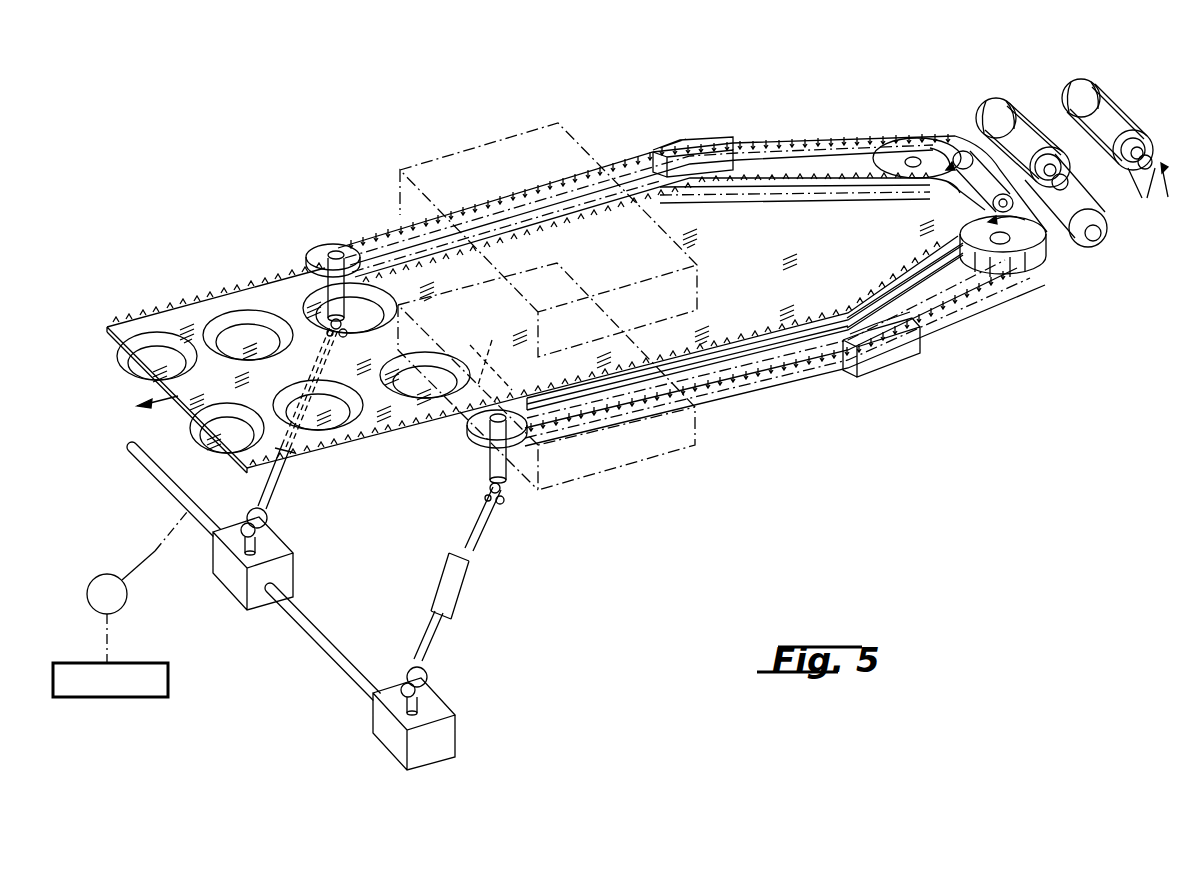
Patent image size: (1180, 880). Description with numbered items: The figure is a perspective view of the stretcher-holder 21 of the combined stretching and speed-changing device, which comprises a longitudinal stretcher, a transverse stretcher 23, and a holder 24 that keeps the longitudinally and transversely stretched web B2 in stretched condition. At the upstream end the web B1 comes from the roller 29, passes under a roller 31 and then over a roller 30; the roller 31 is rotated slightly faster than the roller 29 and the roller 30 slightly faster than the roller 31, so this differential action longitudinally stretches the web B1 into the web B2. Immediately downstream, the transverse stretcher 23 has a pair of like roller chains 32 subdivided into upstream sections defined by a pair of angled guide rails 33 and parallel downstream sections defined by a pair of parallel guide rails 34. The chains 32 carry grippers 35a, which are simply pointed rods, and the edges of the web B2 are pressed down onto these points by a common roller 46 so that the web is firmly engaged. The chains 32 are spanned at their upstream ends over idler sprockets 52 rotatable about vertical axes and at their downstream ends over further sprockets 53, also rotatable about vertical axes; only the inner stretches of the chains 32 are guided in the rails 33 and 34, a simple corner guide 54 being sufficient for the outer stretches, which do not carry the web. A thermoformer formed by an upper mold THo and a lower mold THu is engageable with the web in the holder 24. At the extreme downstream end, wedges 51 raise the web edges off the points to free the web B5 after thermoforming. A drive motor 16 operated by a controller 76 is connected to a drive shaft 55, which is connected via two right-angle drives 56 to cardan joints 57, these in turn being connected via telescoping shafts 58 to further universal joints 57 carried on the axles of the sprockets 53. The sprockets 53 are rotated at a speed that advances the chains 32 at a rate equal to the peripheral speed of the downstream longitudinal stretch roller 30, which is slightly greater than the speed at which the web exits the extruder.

The stretcher-holder 21 is at (803, 509).
The drive motor 16 is at (98, 576).
The transverse stretcher 23 is at (848, 257).
The holder 24 is at (460, 334).
The roller 29 is at (1080, 88).
The roller 30 is at (993, 100).
The roller 31 is at (1085, 240).
The roller chains 32 is at (623, 158).
The angled guide rails 33 is at (925, 285).
The parallel guide rails 34 is at (710, 367).
The grippers 35a is at (823, 135).
The common roller 46 is at (964, 152).
The wedges 51 is at (486, 355).
The idler sprockets 52 is at (898, 147).
The sprockets 53 is at (318, 245).
The corner guide 54 is at (688, 147).
The drive shaft 55 is at (182, 510).
The right-angle drives 56 is at (235, 583).
The cardan joints 57 is at (330, 320).
The telescoping shafts 58 is at (303, 433).
The controller 76 is at (128, 698).
The web B1 is at (1117, 163).
The web B2 is at (1007, 137).
The web B5 is at (172, 330).
The upper mold THo is at (668, 319).
The lower mold THu is at (666, 460).